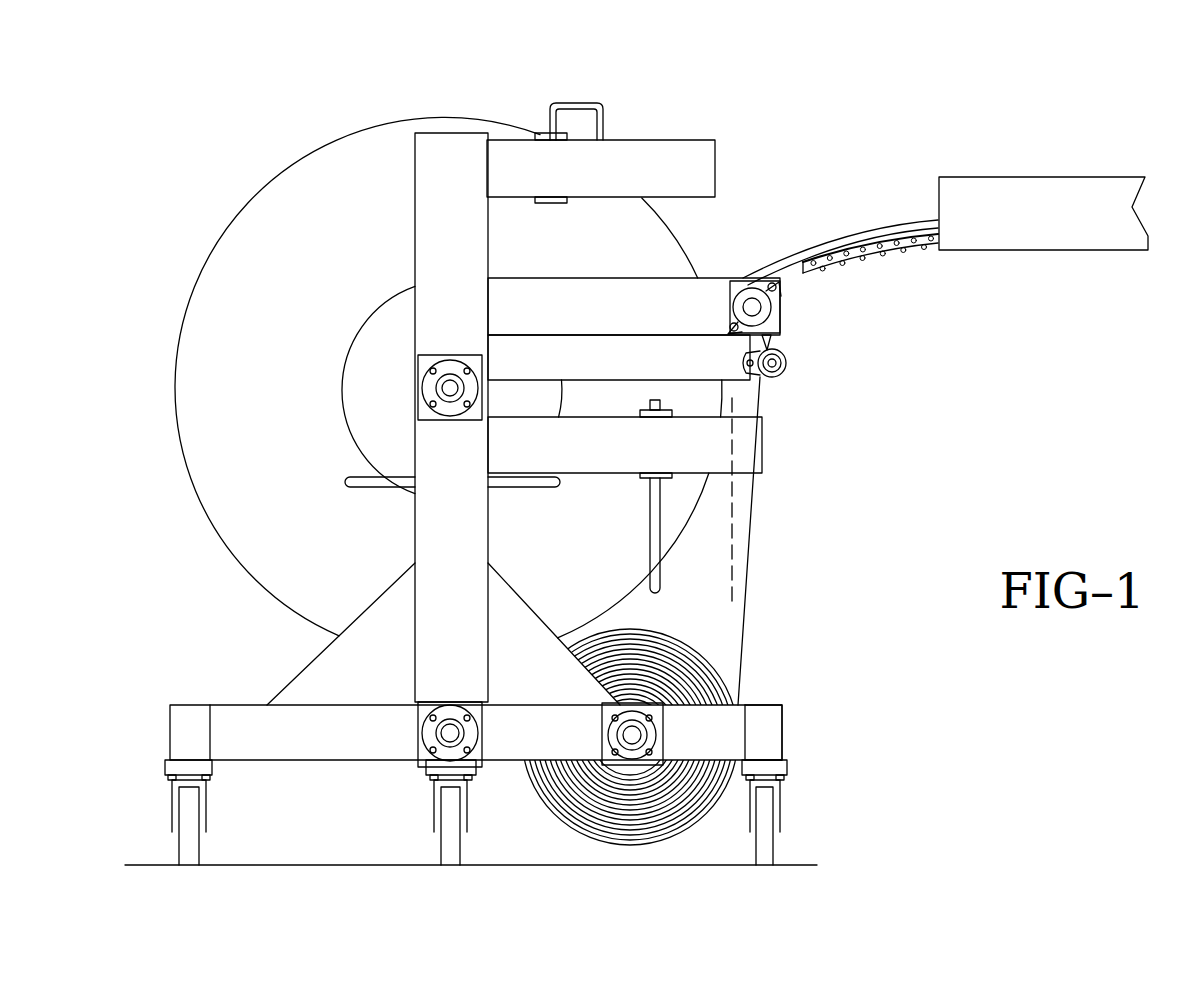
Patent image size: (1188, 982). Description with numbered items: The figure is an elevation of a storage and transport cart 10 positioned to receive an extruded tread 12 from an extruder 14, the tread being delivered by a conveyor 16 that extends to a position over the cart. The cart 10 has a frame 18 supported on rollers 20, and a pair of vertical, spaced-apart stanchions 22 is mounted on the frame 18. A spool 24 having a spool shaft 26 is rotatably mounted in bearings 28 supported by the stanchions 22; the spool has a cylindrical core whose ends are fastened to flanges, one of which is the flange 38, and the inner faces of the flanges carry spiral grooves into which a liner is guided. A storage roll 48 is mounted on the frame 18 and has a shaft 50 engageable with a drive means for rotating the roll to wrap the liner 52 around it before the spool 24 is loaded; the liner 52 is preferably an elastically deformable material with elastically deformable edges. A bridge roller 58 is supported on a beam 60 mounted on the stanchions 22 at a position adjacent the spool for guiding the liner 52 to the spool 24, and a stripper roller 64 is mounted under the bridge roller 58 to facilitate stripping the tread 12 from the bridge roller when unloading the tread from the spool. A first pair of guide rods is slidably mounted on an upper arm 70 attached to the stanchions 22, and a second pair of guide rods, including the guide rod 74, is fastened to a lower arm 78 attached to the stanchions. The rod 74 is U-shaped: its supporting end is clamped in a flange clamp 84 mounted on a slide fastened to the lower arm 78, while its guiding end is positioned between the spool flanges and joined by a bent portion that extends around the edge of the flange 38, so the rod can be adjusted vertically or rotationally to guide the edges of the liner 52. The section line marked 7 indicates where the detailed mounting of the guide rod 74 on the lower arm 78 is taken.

The section line 7- 7 is at (732, 398).
The cart 10 is at (768, 731).
The tread 12 is at (887, 226).
The extruder 14 is at (1043, 240).
The conveyor 16 is at (838, 258).
The frame 18 is at (232, 722).
The rollers 20 is at (185, 822).
The stanchions 22 is at (423, 150).
The spool 24 is at (218, 527).
The spool shaft 26 is at (450, 390).
The bearings 28 is at (432, 378).
The flange 38 is at (262, 213).
The storage roll 48 is at (653, 813).
The shaft 50 is at (630, 738).
The liner 52 is at (747, 634).
The bridge roller 58 is at (757, 310).
The beam 60 is at (712, 283).
The stripper roller 64 is at (788, 363).
The upper arm 70 is at (670, 157).
The guide rod 74 is at (662, 585).
The lower arm 78 is at (763, 443).
The flange clamp 84 is at (542, 137).